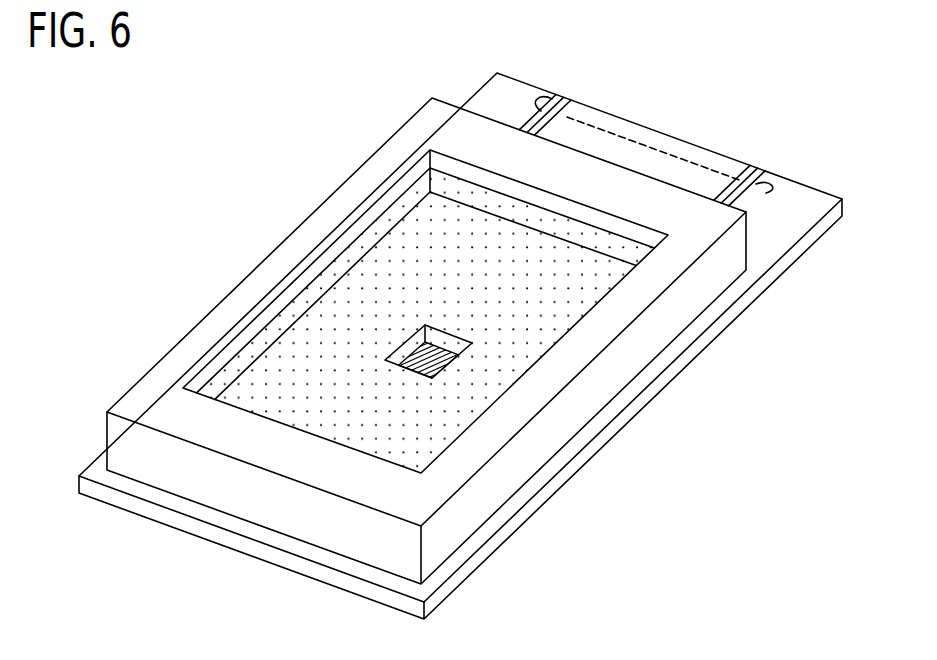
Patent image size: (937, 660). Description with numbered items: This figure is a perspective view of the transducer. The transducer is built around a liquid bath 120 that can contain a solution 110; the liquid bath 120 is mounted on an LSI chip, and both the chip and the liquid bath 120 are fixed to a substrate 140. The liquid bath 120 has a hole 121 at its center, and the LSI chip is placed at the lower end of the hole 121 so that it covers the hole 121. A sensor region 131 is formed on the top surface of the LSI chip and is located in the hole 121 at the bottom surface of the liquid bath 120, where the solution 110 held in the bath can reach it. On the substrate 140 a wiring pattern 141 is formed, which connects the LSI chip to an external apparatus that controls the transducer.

The solution 110 is at (328, 420).
The liquid bath 120 is at (485, 502).
The hole 121 is at (413, 347).
The sensor region 131 is at (450, 360).
The substrate 140 is at (787, 225).
The wiring pattern 141 is at (648, 138).